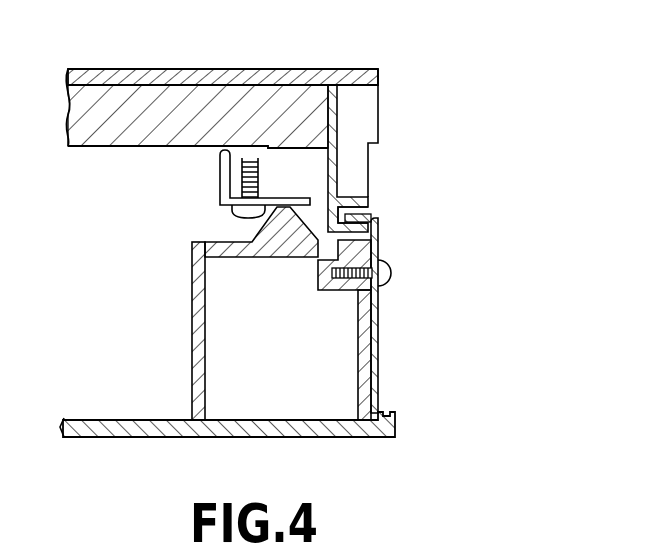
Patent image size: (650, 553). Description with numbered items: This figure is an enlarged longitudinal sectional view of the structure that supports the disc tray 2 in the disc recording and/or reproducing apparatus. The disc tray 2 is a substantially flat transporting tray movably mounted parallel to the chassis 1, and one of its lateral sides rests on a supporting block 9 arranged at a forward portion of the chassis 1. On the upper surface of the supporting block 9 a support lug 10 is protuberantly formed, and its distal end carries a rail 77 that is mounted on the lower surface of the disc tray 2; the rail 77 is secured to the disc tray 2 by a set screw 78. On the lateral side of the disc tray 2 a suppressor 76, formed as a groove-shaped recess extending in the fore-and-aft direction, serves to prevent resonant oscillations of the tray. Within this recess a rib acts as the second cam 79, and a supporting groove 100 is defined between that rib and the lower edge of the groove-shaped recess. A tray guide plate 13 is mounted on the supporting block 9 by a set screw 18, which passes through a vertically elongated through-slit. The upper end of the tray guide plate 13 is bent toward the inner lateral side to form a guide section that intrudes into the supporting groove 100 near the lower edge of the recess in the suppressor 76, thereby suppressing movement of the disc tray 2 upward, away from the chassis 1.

The chassis 1 is at (397, 428).
The disc tray 2 is at (280, 68).
The supporting block 9 is at (379, 342).
The support lug 10 is at (258, 235).
The tray guide plate 13 is at (373, 235).
The set screw 18 is at (388, 273).
The suppressor 76 is at (340, 173).
The rail 77 is at (220, 175).
The set screw 78 is at (238, 210).
The second cam 79 is at (370, 187).
The supporting groove 100 is at (370, 207).